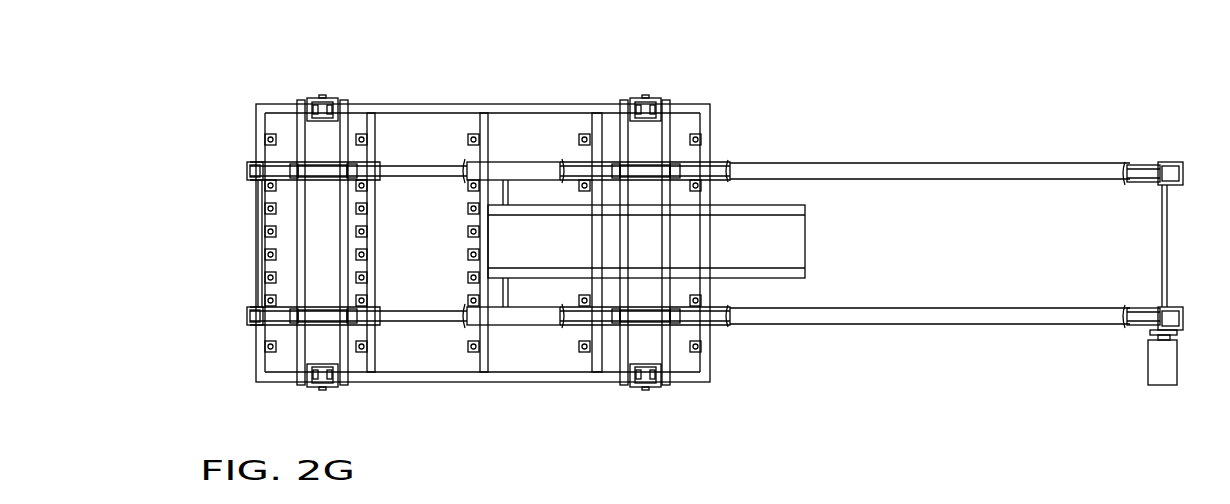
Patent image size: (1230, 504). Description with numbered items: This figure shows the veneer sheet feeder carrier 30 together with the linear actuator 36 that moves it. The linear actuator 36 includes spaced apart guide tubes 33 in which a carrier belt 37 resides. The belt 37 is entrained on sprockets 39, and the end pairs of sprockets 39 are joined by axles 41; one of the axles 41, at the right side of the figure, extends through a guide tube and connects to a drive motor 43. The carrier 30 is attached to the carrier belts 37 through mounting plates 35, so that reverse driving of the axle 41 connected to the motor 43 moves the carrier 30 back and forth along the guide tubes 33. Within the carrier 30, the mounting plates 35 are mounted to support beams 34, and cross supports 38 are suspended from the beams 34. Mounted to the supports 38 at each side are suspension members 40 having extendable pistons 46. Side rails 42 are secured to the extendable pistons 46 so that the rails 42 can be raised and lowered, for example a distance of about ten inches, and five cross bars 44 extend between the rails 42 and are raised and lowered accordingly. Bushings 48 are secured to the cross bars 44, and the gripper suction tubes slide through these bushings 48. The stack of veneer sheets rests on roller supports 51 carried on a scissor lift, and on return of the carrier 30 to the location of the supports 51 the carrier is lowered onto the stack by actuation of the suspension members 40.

The carrier 30 is at (445, 392).
The guide tubes 33 is at (1005, 163).
The support beams 34 is at (425, 167).
The mounting plates 35 is at (323, 158).
The linear actuator 36 is at (919, 337).
The carrier belt 37 is at (732, 170).
The cross supports 38 is at (622, 338).
The sprockets 39 is at (252, 178).
The suspension members 40 is at (330, 100).
The axles 41 is at (260, 215).
The side rails 42 is at (522, 104).
The drive motor 43 is at (1150, 362).
The cross bars 44 is at (257, 145).
The extendable pistons 46 is at (318, 106).
The bushings 48 is at (583, 160).
The roller supports 51 is at (563, 182).